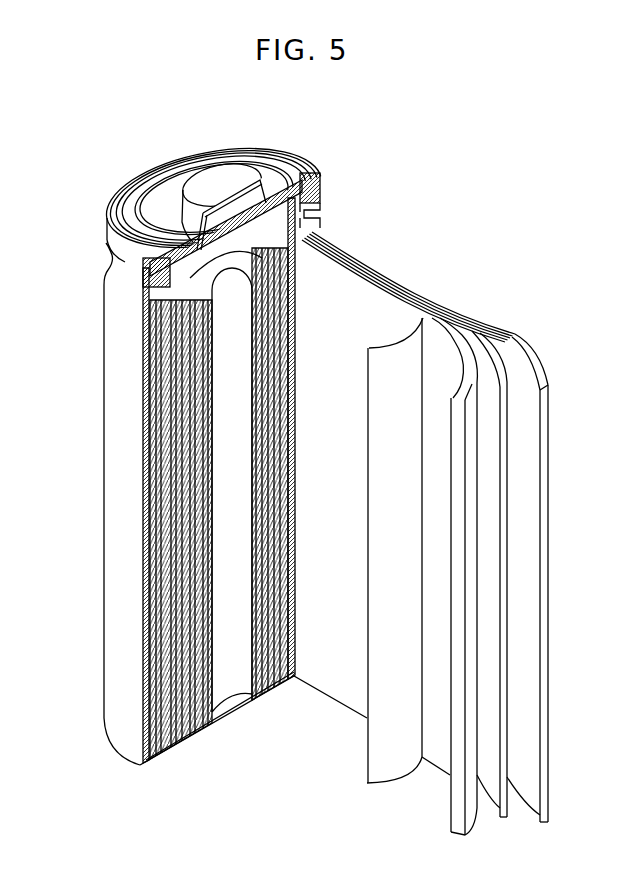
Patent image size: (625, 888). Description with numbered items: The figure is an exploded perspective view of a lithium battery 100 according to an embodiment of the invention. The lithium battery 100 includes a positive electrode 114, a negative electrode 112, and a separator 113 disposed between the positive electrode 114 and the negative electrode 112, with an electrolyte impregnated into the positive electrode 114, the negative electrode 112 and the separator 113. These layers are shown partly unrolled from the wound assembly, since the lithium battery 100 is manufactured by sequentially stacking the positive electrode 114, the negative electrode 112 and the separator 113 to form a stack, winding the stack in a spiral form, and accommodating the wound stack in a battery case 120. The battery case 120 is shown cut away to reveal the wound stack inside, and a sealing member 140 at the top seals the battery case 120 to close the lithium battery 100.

The lithium battery 100 is at (443, 158).
The negative electrode 112 is at (530, 357).
The separator 113 is at (373, 283).
The positive electrode 114 is at (435, 325).
The battery case 120 is at (108, 480).
The sealing member 140 is at (218, 185).